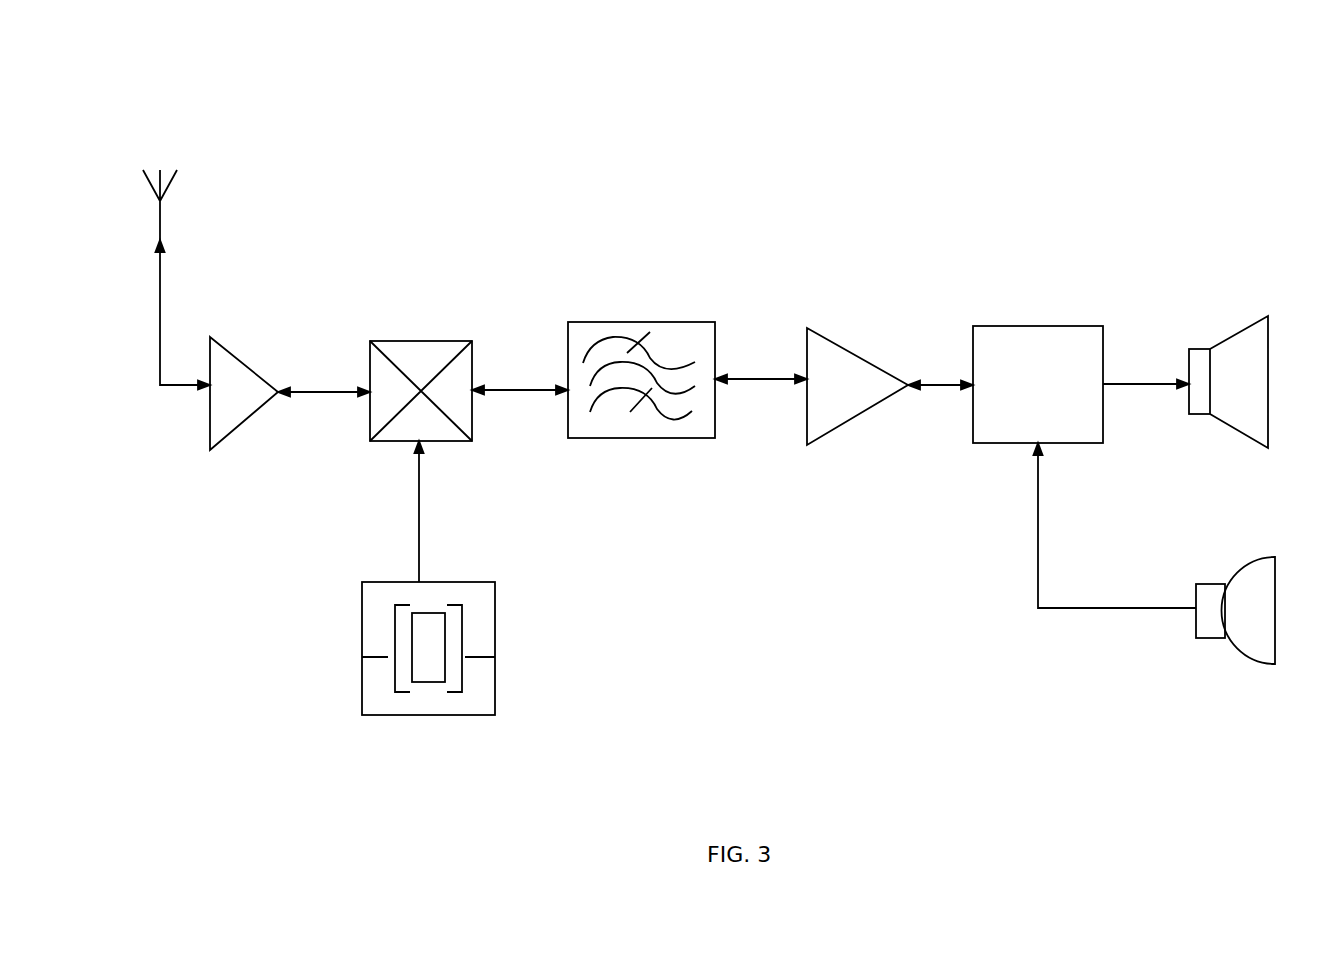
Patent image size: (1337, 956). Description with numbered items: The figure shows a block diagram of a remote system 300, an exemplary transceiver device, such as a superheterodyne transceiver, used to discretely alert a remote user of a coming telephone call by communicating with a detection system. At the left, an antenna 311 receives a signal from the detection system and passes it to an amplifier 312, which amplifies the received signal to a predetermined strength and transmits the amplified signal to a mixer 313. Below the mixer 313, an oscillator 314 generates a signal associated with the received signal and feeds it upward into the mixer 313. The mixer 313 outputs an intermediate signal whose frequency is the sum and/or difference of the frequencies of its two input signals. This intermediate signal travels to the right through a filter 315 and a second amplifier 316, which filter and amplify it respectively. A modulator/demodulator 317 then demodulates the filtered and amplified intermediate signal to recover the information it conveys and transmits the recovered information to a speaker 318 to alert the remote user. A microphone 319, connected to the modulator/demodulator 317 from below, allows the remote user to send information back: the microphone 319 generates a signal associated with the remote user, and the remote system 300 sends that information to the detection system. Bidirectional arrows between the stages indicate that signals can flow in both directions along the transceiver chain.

The remote system 300 is at (190, 82).
The antenna 311 is at (160, 173).
The amplifier 312 is at (226, 290).
The mixer 313 is at (368, 278).
The oscillator 314 is at (510, 657).
The filter 315 is at (592, 277).
The amplifier 316 is at (807, 268).
The modulator/demodulator 317 is at (1055, 318).
The speaker 318 is at (1189, 270).
The microphone 319 is at (1193, 661).